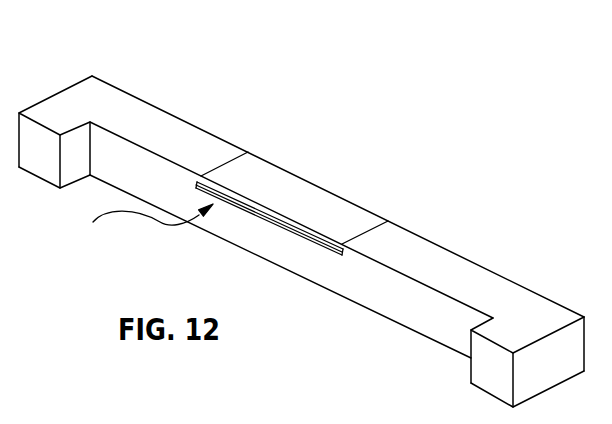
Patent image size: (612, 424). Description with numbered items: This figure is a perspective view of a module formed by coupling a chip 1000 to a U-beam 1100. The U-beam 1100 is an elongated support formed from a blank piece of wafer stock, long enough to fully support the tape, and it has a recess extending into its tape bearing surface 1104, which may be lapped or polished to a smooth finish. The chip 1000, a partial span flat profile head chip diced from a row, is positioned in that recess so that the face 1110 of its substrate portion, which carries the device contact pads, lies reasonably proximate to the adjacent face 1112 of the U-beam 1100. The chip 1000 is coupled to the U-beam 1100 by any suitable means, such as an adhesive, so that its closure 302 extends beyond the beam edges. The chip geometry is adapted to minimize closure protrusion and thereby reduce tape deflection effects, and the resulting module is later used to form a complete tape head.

The U-beam 1100 is at (97, 92).
The tape bearing surface 1104 is at (430, 260).
The face of the U-beam 1112 is at (410, 302).
The chip 1000 is at (333, 220).
The closure 302 is at (268, 226).
The face of the substrate portion of the chip 1110 is at (143, 229).